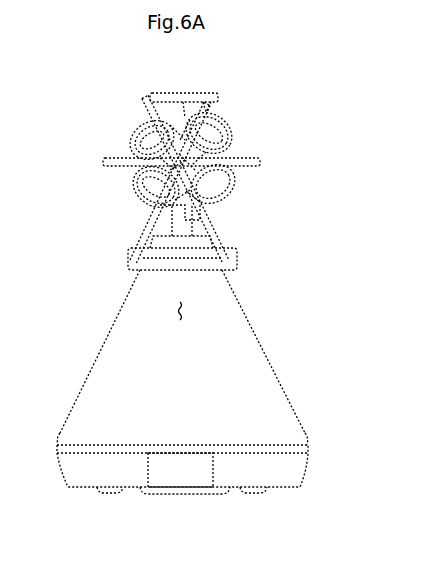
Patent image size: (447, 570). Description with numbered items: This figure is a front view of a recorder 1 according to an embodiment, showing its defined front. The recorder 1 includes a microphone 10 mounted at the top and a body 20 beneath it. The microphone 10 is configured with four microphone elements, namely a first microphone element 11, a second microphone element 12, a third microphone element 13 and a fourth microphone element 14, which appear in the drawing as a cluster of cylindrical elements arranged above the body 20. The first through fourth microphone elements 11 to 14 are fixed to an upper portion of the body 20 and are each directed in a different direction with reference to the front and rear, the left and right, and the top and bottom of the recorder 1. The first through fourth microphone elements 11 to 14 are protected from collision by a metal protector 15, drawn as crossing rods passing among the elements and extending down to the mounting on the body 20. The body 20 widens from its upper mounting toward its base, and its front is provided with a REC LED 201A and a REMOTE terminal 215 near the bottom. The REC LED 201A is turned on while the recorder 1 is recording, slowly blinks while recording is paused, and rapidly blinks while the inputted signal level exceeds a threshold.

The recorder 1 is at (190, 66).
The microphone 10 is at (240, 117).
The first microphone element 11 is at (227, 137).
The second microphone element 12 is at (135, 182).
The third microphone element 13 is at (222, 184).
The fourth microphone element 14 is at (148, 118).
The metal protector 15 is at (150, 97).
The body 20 is at (262, 308).
The REC LED 201A is at (180, 318).
The REMOTE terminal 215 is at (166, 471).